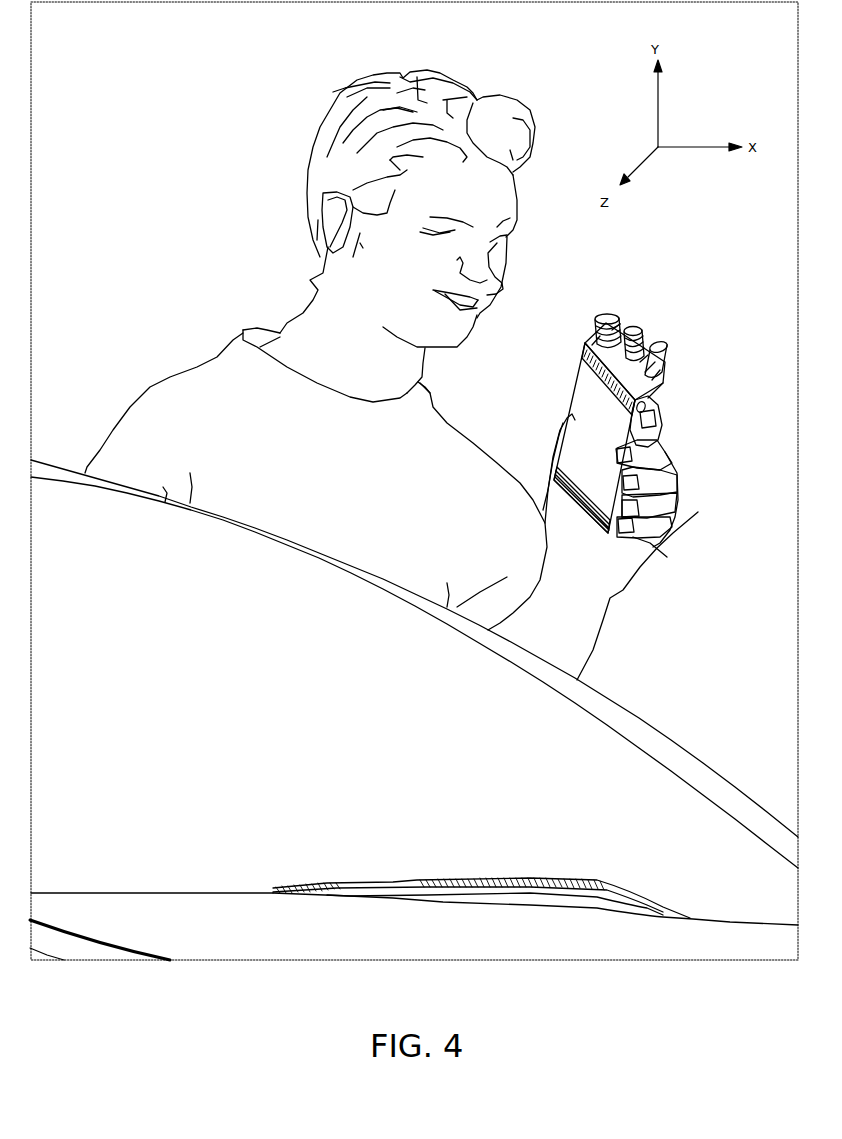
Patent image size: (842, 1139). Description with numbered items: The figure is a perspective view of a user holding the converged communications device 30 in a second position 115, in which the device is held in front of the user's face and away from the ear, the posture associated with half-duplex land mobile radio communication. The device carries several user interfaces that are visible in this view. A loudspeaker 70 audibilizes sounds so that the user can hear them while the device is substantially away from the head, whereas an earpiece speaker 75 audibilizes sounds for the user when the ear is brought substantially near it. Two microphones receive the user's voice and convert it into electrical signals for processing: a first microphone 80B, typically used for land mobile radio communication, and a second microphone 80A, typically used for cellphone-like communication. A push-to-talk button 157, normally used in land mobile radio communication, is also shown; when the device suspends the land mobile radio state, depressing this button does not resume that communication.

The second position 115 is at (700, 490).
The converged communications device 30 is at (640, 541).
The loudspeaker 70 is at (609, 452).
The earpiece speaker 75 is at (605, 375).
The second microphone 80A is at (603, 527).
The first microphone 80B is at (585, 344).
The push-to-talk button 157 is at (650, 414).